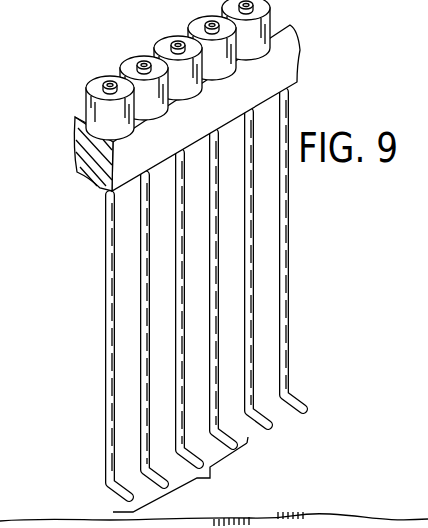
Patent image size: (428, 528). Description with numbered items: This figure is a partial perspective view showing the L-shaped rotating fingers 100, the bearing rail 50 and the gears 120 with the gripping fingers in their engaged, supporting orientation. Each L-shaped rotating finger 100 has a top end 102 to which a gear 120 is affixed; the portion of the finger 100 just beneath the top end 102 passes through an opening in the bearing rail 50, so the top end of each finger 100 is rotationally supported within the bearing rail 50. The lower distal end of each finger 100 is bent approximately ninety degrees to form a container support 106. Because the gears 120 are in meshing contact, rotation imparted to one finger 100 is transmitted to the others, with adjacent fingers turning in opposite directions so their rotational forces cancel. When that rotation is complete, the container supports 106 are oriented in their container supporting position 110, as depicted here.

The bearing rail 50 is at (74, 160).
The L-shaped rotating finger 100 is at (105, 385).
The top end 102 is at (146, 62).
The container support 106 is at (302, 412).
The container supporting position 110 is at (180, 474).
The gear 120 is at (156, 70).